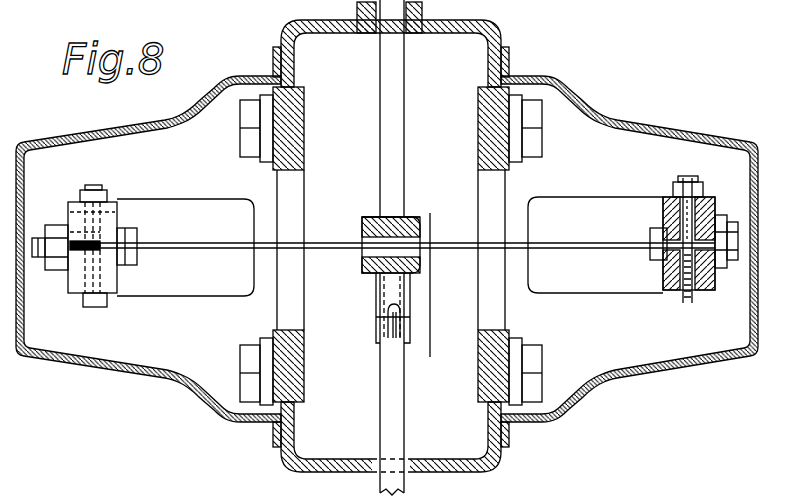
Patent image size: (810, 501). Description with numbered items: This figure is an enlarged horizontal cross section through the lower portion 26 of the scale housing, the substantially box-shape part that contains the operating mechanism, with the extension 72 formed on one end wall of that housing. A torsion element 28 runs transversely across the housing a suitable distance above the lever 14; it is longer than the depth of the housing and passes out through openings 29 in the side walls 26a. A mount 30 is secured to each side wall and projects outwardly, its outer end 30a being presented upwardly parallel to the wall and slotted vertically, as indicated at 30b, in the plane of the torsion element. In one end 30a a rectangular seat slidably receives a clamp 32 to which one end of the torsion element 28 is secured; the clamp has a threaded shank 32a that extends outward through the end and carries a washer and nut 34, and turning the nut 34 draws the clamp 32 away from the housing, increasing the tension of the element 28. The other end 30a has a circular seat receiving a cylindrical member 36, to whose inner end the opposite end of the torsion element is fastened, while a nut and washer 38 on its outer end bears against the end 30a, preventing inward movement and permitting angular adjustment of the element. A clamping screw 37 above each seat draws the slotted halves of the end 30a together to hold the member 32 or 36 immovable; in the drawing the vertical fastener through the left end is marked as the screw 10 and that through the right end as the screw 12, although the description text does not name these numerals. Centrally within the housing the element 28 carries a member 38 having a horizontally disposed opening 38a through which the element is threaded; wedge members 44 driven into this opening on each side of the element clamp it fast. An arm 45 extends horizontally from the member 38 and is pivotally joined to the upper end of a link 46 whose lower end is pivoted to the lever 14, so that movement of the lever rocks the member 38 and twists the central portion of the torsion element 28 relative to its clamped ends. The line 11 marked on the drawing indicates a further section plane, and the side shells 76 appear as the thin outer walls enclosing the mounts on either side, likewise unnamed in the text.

The bolt 10 is at (95, 200).
The section line 11 is at (435, 283).
The bolt 12 is at (683, 178).
The lever 14 is at (396, 76).
The lower portion 26 is at (500, 472).
The side walls 26a is at (600, 41).
The torsion element 28 is at (322, 244).
The openings 29 is at (290, 185).
The mount 30 is at (207, 187).
The outer end 30a is at (663, 191).
The slot 30b is at (108, 307).
The clamp 32 is at (125, 230).
The threaded shank 32a is at (35, 238).
The washer and nut 34 is at (50, 223).
The cylindrical member 36 is at (652, 234).
The clamping screw 37 is at (100, 190).
The member 38 is at (530, 249).
The horizontally disposed opening 38a is at (480, 179).
The wedge members 44 is at (418, 238).
The arm 45 is at (410, 291).
The link 46 is at (380, 321).
The extension 72 is at (357, 12).
The side shell 76 is at (57, 141).